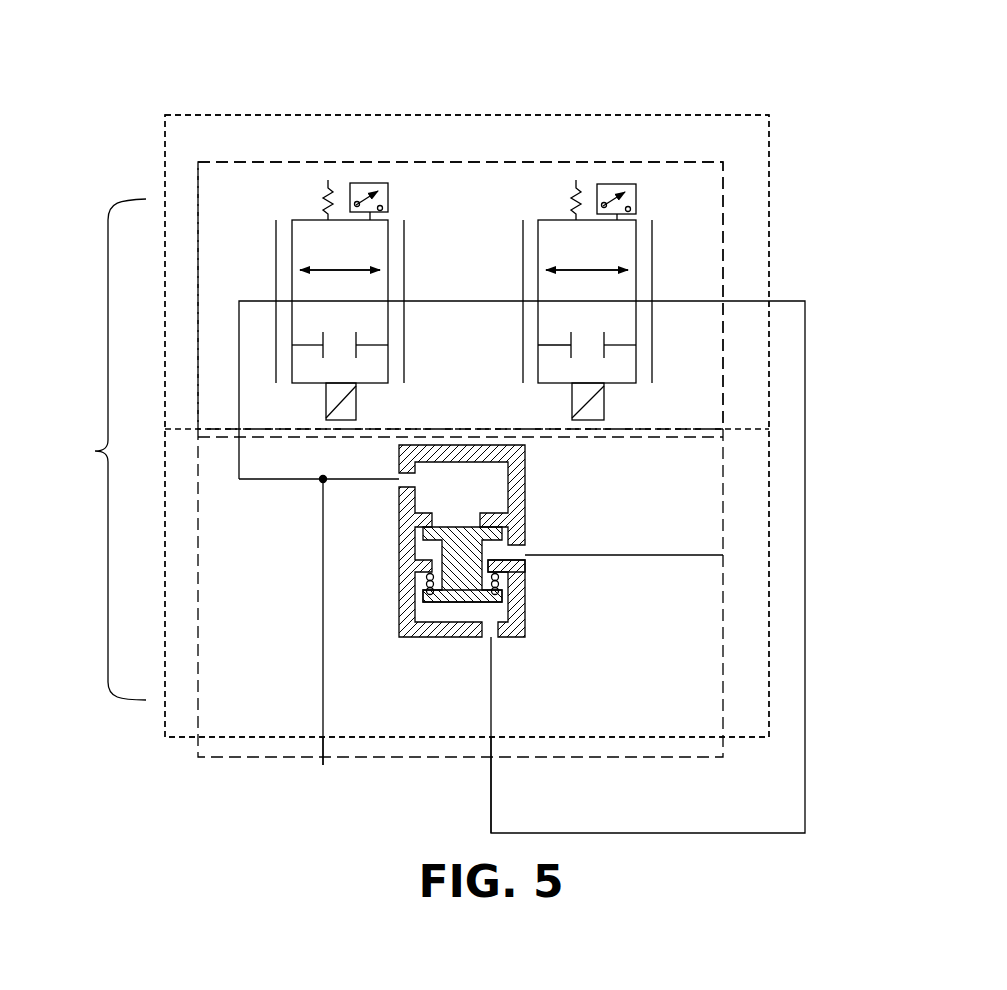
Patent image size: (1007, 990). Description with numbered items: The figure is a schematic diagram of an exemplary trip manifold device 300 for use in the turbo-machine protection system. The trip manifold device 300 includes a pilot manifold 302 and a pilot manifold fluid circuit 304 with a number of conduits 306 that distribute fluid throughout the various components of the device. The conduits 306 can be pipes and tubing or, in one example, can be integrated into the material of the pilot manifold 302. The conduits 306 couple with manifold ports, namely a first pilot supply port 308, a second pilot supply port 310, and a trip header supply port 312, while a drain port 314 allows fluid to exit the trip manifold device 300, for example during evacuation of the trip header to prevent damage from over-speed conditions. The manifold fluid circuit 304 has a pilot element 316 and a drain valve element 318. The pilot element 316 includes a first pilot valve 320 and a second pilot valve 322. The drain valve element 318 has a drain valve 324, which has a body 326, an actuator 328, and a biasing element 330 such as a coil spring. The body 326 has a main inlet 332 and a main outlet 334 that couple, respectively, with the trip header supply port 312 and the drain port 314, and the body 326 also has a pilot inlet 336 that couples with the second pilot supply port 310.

The trip manifold device 300 is at (232, 92).
The pilot manifold 302 is at (590, 162).
The pilot manifold fluid circuit 304 is at (92, 452).
The conduits 306 is at (323, 650).
The first pilot supply port 308 is at (738, 290).
The second pilot supply port 310 is at (485, 765).
The trip header supply port 312 is at (733, 565).
The drain port 314 is at (320, 765).
The pilot element 316 is at (770, 168).
The drain valve element 318 is at (770, 492).
The first pilot valve 320 is at (636, 220).
The second pilot valve 322 is at (295, 220).
The drain valve 324 is at (533, 490).
The body 326 is at (525, 517).
The actuator 328 is at (455, 612).
The biasing element 330 is at (430, 583).
The main inlet 332 is at (535, 568).
The main outlet 334 is at (390, 482).
The pilot inlet 336 is at (495, 645).